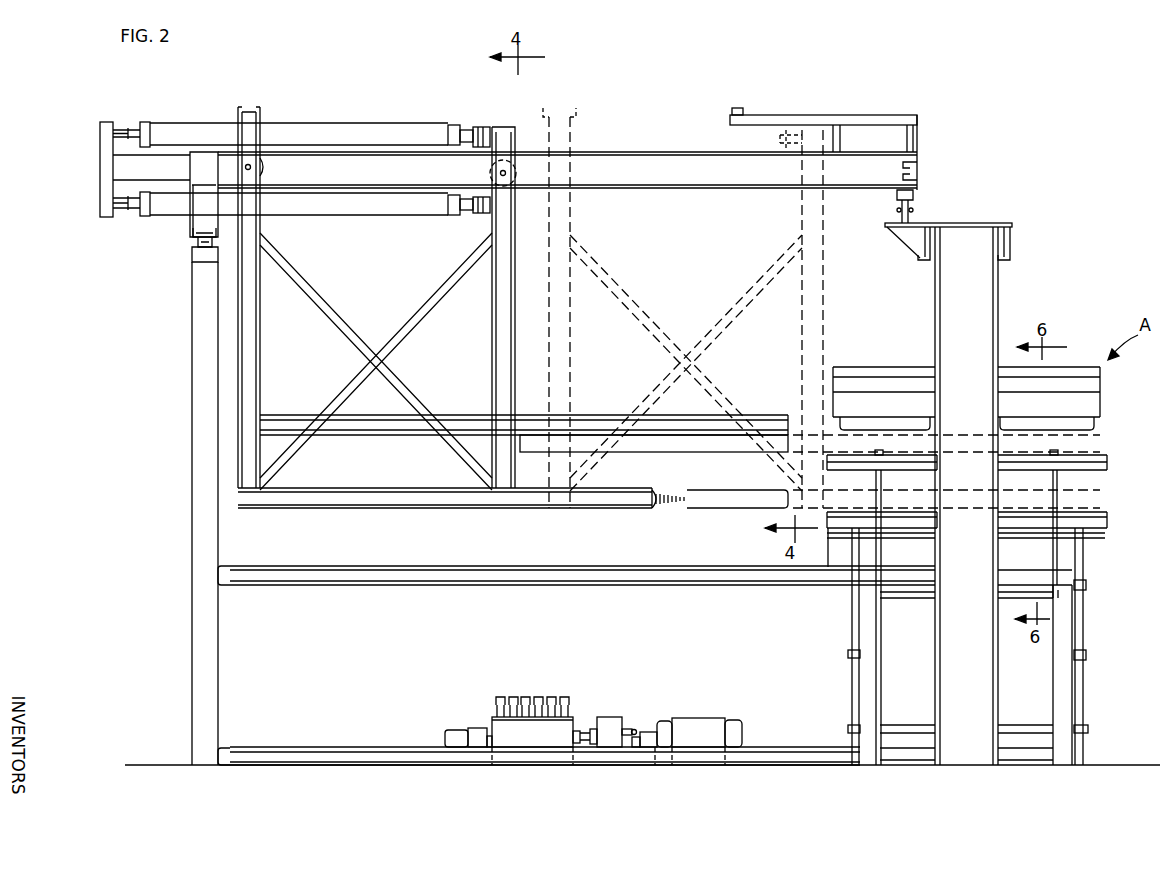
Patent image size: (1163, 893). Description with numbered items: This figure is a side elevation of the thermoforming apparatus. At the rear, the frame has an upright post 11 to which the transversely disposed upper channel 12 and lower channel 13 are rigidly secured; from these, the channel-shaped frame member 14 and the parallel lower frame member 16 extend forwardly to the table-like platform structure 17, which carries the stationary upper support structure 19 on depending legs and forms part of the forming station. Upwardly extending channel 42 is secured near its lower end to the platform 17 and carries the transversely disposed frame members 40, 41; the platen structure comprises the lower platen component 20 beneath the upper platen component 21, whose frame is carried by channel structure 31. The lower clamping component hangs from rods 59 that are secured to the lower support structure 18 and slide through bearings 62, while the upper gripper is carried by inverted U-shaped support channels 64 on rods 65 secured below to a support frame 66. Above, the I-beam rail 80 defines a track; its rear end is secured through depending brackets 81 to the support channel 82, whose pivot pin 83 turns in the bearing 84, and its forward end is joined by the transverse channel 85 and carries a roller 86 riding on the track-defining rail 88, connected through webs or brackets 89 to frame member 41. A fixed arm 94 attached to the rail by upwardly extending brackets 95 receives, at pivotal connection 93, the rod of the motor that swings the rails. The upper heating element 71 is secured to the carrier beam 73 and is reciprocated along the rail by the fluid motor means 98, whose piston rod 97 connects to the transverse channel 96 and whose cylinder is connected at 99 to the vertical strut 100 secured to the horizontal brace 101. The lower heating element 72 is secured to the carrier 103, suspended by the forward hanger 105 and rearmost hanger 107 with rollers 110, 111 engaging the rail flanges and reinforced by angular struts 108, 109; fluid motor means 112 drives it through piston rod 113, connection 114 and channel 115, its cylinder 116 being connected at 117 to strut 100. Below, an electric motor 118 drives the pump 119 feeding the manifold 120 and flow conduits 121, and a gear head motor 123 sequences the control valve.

The upright post 11 is at (192, 540).
The upper channel 12 is at (228, 565).
The lower channel 13 is at (220, 745).
The channel-shaped frame member 14 is at (332, 565).
The lower frame member 16 is at (332, 748).
The table-like platform structure 17 is at (1005, 566).
The lower support structure 18 is at (1087, 728).
The upper support structure 19 is at (906, 585).
The lower platen component 20 is at (1108, 518).
The upper platen component 21 is at (1102, 420).
The channel structure 31 is at (1102, 372).
The transversely disposed frame member 40 is at (1012, 258).
The transversely disposed frame member 41 is at (918, 258).
The upwardly extending channel 42 is at (985, 225).
The rods 59 is at (852, 612).
The bearings 62 is at (1085, 585).
The inverted U-shaped support channels 64 is at (1108, 462).
The rods 65 is at (882, 553).
The support frame 66 is at (1057, 593).
The upper heating element 71 is at (712, 440).
The lower heating element 72 is at (685, 490).
The carrier beam 73 is at (670, 415).
The I-beam rail 80 is at (633, 152).
The depending brackets 81 is at (195, 215).
The support channel 82 is at (191, 233).
The pivot pin 83 is at (195, 242).
The bearing 84 is at (198, 250).
The transversely extending channel 85 is at (920, 160).
The roller 86 is at (898, 213).
The track-defining rail 88 is at (928, 223).
The webs or brackets 89 is at (905, 243).
The pivotal connection 93 is at (740, 108).
The fixed arm 94 is at (795, 115).
The upwardly extending brackets 95 is at (905, 135).
The transverse channel 96 is at (483, 214).
The piston rod 97 is at (466, 207).
The fluid motor means 98 is at (390, 215).
The cylinder connection 99 is at (122, 207).
The vertical strut 100 is at (105, 190).
The horizontal brace 101 is at (118, 167).
The carrier 103 is at (597, 505).
The forward hanger 105 is at (513, 130).
The rearmost hanger 107 is at (260, 352).
The angularly disposed strut 108 is at (418, 312).
The angularly disposed strut 109 is at (335, 312).
The roller 110 is at (490, 172).
The roller 111 is at (258, 165).
The fluid motor means 112 is at (362, 128).
The piston rod 113 is at (455, 127).
The rod connection 114 is at (470, 130).
The channel 115 is at (488, 128).
The cylinder 116 is at (143, 125).
The cylinder connection 117 is at (132, 130).
The electric motor 118 is at (690, 718).
The pump 119 is at (615, 720).
The manifold 120 is at (572, 718).
The flow conduits 121 is at (555, 697).
The gear head motor 123 is at (468, 730).